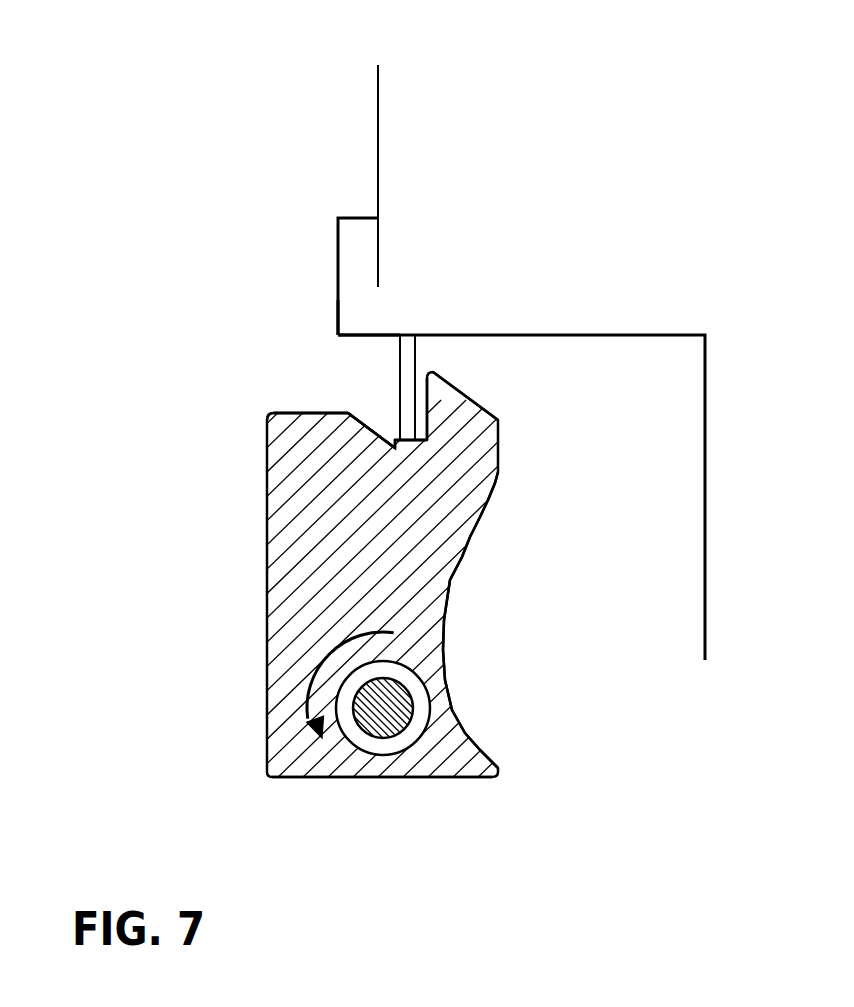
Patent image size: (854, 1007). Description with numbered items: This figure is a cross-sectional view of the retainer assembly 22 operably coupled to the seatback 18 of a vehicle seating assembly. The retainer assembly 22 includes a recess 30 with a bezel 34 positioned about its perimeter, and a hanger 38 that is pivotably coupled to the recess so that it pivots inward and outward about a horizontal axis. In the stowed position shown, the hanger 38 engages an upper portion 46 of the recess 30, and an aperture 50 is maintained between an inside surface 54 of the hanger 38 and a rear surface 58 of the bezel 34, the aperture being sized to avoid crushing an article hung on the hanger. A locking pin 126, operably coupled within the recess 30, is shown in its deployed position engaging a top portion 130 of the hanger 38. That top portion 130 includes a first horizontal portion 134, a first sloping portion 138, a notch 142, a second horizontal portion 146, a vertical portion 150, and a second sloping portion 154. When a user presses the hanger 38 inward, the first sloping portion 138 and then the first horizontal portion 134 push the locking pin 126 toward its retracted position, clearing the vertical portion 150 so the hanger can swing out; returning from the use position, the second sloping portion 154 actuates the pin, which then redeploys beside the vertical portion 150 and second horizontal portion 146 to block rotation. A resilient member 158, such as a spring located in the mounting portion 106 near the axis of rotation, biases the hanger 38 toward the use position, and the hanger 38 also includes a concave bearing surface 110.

The seatback 18 is at (380, 93).
The retainer assembly 22 is at (173, 293).
The recess 30 is at (673, 352).
The bezel 34 is at (337, 263).
The hanger 38 is at (267, 601).
The upper portion 46 is at (372, 330).
The aperture 50 is at (570, 578).
The inside surface 54 is at (480, 516).
The rear surface 58 is at (337, 320).
The mounting portion 106 is at (338, 777).
The concave bearing surface 110 is at (447, 657).
The locking pin 126 is at (407, 355).
The top portion 130 is at (318, 418).
The first horizontal portion 134 is at (295, 413).
The first sloping portion 138 is at (363, 422).
The notch 142 is at (395, 450).
The second horizontal portion 146 is at (427, 442).
The vertical portion 150 is at (428, 390).
The second sloping portion 154 is at (478, 403).
The resilient member 158 is at (413, 733).